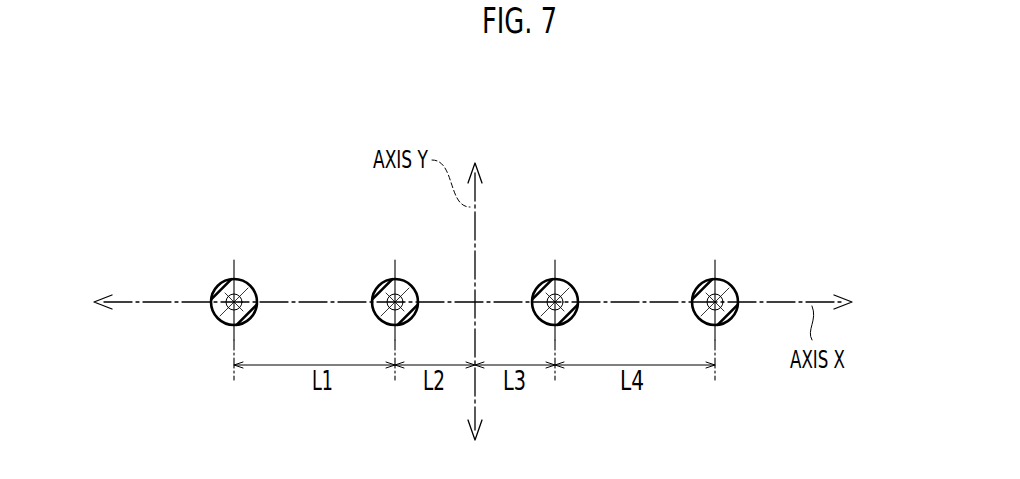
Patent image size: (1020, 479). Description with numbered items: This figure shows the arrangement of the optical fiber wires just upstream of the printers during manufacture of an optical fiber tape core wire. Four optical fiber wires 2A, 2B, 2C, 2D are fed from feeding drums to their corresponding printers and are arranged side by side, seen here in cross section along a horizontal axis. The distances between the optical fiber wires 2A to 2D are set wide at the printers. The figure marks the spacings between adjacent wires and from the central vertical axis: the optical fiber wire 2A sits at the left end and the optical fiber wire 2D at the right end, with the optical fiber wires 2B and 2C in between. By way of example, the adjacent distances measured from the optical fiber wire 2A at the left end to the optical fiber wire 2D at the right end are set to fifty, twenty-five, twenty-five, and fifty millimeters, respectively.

The optical fiber wire 2A is at (217, 283).
The optical fiber wire 2B is at (379, 283).
The optical fiber wire 2C is at (567, 280).
The optical fiber wire 2D is at (726, 280).